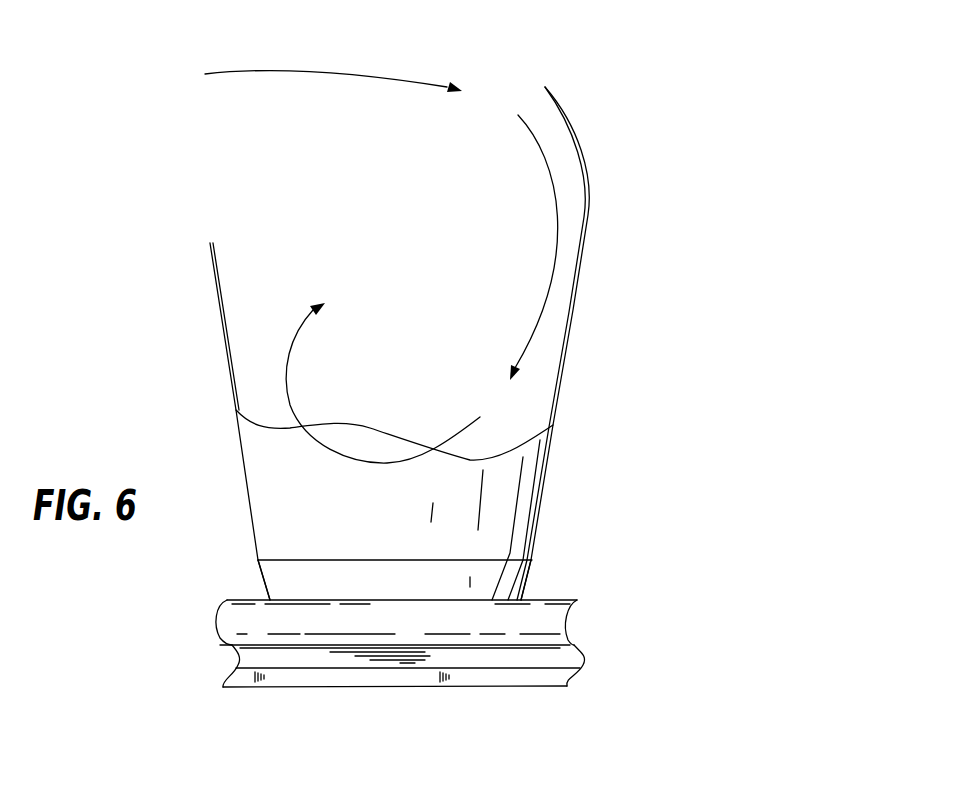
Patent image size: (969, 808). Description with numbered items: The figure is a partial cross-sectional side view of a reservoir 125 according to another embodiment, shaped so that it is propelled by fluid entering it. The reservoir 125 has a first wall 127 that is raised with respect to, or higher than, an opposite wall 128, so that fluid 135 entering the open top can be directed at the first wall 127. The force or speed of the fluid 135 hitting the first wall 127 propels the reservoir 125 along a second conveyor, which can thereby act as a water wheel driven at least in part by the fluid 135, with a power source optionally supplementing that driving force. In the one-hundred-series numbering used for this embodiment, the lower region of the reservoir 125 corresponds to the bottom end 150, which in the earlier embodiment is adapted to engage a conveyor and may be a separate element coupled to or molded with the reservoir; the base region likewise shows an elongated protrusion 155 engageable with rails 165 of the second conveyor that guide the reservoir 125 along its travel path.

The reservoir 125 is at (656, 228).
The first wall 127 is at (577, 148).
The opposite wall 128 is at (223, 330).
The fluid 135 is at (521, 476).
The bottom portion 150 is at (246, 577).
The lower base ring 155 is at (525, 672).
The upper base ring 165 is at (542, 624).